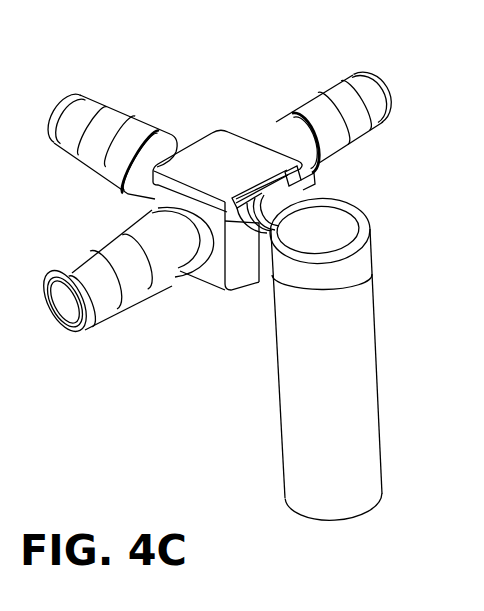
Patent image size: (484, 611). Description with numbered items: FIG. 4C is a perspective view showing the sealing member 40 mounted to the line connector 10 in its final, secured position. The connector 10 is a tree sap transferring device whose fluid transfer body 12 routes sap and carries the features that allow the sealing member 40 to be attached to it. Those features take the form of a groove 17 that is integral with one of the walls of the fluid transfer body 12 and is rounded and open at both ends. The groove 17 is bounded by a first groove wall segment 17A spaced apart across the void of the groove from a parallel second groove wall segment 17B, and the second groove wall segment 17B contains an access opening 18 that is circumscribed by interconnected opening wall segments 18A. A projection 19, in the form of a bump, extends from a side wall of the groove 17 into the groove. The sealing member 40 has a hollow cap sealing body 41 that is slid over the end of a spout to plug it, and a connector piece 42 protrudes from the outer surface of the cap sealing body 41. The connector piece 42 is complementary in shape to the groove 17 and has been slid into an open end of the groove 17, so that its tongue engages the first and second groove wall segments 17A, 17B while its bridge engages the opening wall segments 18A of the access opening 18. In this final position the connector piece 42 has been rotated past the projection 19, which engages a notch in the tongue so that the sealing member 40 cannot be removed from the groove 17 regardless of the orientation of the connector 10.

The connector 10 is at (109, 68).
The fluid transfer body 12 is at (220, 133).
The groove 17 is at (264, 162).
The first groove wall segment 17A is at (232, 199).
The second groove wall segment 17B is at (303, 195).
The access opening 18 is at (280, 169).
The opening wall segments 18A is at (318, 173).
The projection 19 is at (220, 222).
The sealing member 40 is at (391, 299).
The cap sealing body 41 is at (363, 360).
The connector piece 42 is at (251, 176).